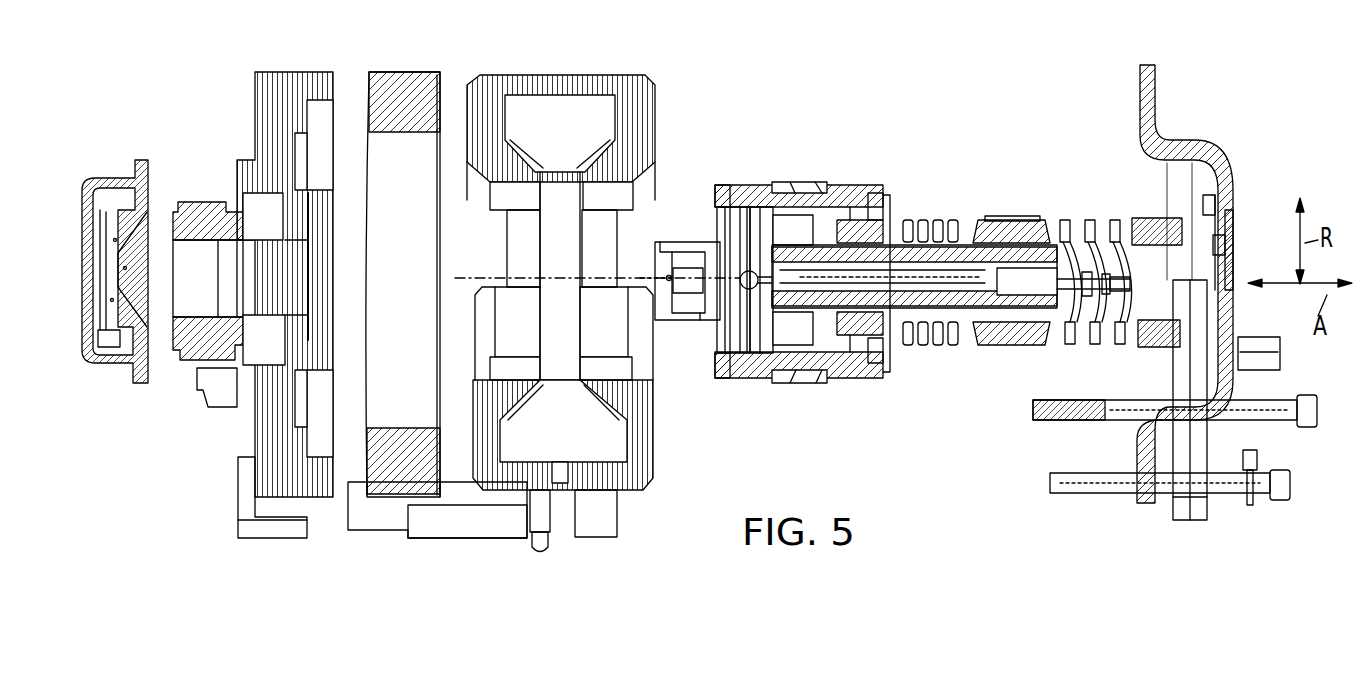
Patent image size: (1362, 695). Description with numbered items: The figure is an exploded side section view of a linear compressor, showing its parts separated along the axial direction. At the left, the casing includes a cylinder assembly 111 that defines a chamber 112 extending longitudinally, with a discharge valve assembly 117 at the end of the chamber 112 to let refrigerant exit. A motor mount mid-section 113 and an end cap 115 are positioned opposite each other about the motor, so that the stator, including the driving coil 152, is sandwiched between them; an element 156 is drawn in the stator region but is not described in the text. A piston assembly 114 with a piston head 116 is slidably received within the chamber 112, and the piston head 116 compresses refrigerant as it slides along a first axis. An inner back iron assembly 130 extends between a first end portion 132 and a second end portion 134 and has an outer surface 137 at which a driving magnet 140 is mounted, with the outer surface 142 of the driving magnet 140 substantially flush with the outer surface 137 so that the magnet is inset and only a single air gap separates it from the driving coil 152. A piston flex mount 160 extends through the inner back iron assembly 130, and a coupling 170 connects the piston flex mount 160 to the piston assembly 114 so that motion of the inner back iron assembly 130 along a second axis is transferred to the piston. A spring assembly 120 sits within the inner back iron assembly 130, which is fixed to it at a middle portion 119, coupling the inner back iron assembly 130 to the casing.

The cylinder assembly 111 is at (268, 428).
The chamber 112 is at (190, 275).
The motor mount mid-section 113 is at (392, 473).
The piston assembly 114 is at (694, 326).
The end cap 115 is at (1212, 145).
The piston head 116 is at (657, 277).
The discharge valve assembly 117 is at (105, 178).
The middle portion 119 is at (1010, 216).
The spring assembly 120 is at (1043, 220).
The inner back iron assembly 130 is at (841, 385).
The first end portion 132 is at (887, 183).
The second end portion 134 is at (716, 183).
The outer surface 137 is at (856, 183).
The driving magnet 140 is at (784, 188).
The outer surface 142 is at (811, 180).
The driving coil 152 is at (563, 112).
The stator core 156 is at (652, 78).
The piston flex mount 160 is at (1038, 287).
The coupling 170 is at (1073, 285).